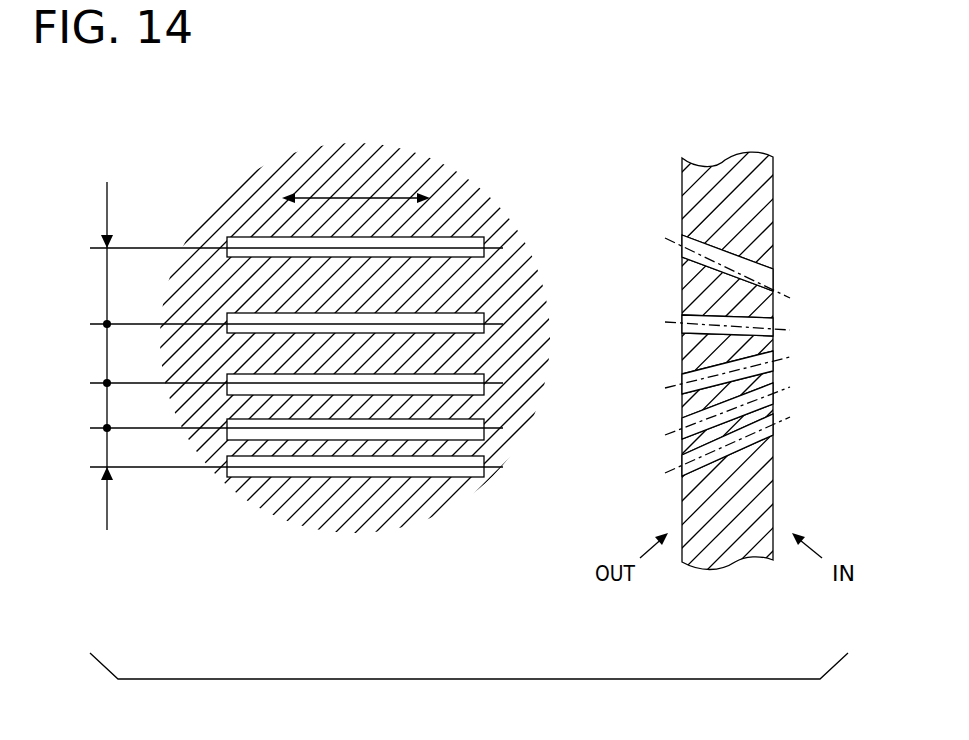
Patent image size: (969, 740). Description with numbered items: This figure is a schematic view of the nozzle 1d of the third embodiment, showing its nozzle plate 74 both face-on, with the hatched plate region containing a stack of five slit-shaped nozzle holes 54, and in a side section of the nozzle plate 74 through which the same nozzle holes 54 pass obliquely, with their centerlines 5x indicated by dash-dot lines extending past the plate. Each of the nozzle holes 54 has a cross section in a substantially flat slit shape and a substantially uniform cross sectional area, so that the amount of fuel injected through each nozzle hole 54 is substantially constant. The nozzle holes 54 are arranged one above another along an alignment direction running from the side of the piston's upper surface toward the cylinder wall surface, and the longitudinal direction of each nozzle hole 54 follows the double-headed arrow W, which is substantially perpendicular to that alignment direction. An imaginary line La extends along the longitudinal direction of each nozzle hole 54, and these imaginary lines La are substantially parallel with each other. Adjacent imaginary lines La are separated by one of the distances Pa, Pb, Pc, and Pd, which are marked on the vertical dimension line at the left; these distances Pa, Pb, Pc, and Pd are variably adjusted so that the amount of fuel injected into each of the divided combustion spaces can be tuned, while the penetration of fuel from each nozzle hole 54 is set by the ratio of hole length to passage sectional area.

The nozzle 1d is at (191, 544).
The nozzle holes 54 is at (472, 238).
The nozzle plate 74 is at (764, 196).
The center lines of elements 5x is at (788, 417).
The imaginary lines La is at (136, 248).
The distance Pa is at (107, 448).
The distance Pb is at (107, 405).
The distance Pc is at (107, 354).
The distance Pd is at (107, 283).
The arrow W is at (358, 198).